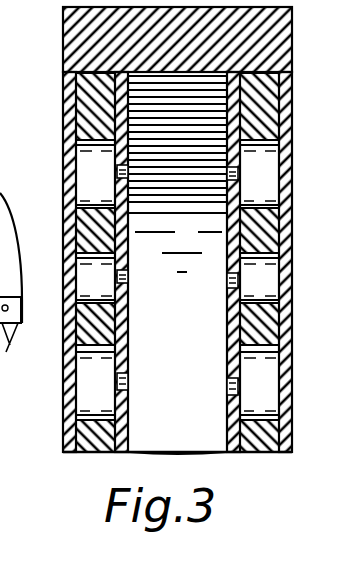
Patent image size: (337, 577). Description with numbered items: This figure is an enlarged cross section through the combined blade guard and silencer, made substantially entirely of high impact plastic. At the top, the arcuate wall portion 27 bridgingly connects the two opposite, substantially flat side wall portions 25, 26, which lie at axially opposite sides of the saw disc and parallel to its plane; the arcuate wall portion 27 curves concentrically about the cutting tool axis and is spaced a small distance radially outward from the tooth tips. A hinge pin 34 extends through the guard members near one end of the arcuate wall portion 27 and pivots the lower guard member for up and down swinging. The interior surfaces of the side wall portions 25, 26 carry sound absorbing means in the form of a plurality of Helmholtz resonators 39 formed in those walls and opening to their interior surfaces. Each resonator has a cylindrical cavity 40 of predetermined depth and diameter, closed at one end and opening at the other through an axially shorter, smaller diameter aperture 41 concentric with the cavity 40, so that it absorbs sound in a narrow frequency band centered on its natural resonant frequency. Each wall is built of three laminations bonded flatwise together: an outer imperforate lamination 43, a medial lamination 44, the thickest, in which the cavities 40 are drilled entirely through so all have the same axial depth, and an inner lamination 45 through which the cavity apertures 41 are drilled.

The side wall portion 25 is at (54, 95).
The side wall portion 26 is at (225, 272).
The arcuate wall portion 27 is at (77, 33).
The hinge pin 34 is at (11, 282).
The Helmholtz resonators 39 is at (76, 160).
The cylindrical cavity 40 is at (250, 412).
The aperture 41 is at (112, 393).
The outer imperforate lamination 43 is at (72, 450).
The medial lamination 44 is at (100, 443).
The inner lamination 45 is at (222, 453).